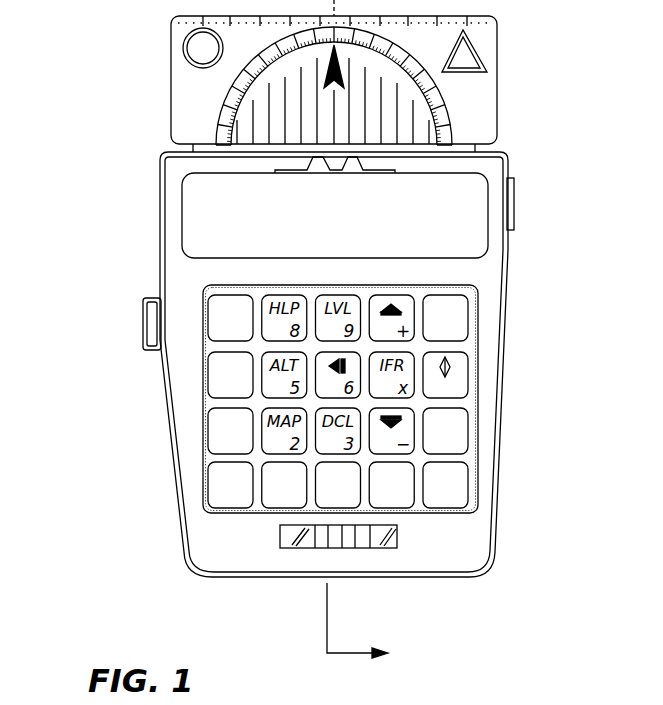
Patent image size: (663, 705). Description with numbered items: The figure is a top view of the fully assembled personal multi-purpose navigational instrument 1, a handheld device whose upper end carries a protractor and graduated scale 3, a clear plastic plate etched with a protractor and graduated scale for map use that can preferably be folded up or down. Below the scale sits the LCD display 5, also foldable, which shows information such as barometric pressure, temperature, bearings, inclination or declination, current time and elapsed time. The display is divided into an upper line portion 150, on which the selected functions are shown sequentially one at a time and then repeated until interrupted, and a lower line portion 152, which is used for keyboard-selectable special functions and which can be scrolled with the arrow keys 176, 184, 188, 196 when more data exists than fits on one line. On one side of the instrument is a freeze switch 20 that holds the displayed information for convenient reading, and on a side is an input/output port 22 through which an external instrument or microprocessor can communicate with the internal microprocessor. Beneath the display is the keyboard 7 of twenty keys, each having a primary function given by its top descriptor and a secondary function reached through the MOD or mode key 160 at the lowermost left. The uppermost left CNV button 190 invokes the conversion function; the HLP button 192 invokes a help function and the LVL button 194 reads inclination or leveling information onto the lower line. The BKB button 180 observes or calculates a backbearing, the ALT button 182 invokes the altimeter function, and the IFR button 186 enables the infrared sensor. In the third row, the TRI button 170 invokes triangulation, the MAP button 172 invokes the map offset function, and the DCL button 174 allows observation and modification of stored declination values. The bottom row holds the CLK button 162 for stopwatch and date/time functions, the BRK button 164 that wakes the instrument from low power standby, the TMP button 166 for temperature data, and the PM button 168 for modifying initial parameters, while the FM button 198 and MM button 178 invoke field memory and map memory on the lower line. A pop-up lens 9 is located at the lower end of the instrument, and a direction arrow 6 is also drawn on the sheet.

The personal multi-purpose navigational instrument 1 is at (530, 80).
The protractor and graduated scale 3 is at (200, 88).
The LCD display 5 is at (183, 205).
The longitudinal axis direction 6 is at (367, 625).
The keyboard 7 is at (207, 430).
The pop-up lens 9 is at (367, 548).
The freeze switch 20 is at (143, 330).
The input/output port 22 is at (514, 203).
The upper line portion 150 is at (467, 182).
The lower line portion 152 is at (483, 250).
The MOD or mode key 160 is at (217, 505).
The CLK/"." button 162 is at (268, 510).
The break button (BRK) 164 is at (378, 507).
The TMP/"÷" button 166 is at (413, 507).
The program (PM) button 168 is at (477, 480).
The TRI/"1" button 170 is at (218, 448).
The MAP/"2" button 172 is at (207, 398).
The DCL/"3" button 174 is at (475, 403).
The arrow key 176 is at (475, 420).
The Map Memory (MM) button 178 is at (475, 443).
The BKB/"4" button 180 is at (207, 377).
The altimeter function (ALT) button 182 is at (220, 343).
The arrow key 184 is at (475, 347).
The IFR/"x" button 186 is at (475, 365).
The arrow key 188 is at (475, 383).
The CNV button 190 is at (208, 302).
The HLP/"8" button 192 is at (208, 295).
The LVL/"9" button 194 is at (357, 292).
The arrow key 196 is at (468, 296).
The Field Memory (FM) button 198 is at (475, 322).